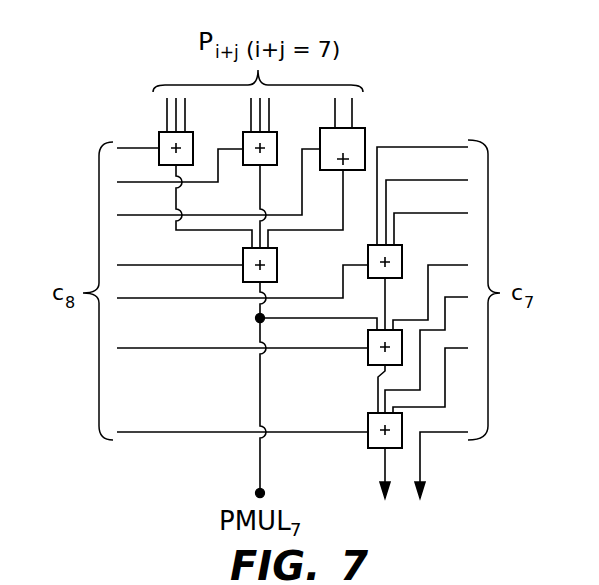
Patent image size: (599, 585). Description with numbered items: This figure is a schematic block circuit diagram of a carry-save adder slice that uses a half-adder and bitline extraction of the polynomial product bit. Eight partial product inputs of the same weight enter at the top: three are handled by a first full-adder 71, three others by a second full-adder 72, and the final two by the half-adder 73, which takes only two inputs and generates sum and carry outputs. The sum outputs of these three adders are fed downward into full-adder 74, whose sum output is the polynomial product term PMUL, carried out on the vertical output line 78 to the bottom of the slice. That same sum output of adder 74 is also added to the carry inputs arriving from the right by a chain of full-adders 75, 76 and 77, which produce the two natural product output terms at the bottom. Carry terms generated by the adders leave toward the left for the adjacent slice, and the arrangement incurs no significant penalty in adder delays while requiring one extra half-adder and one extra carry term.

The first full-adder 71 is at (193, 138).
The second full-adder 72 is at (277, 138).
The half-adder 73 is at (365, 138).
The full-adder 74 is at (277, 273).
The full-adder 75 is at (402, 258).
The full-adder 76 is at (368, 356).
The full-adder 77 is at (367, 443).
The output line 78 is at (258, 373).